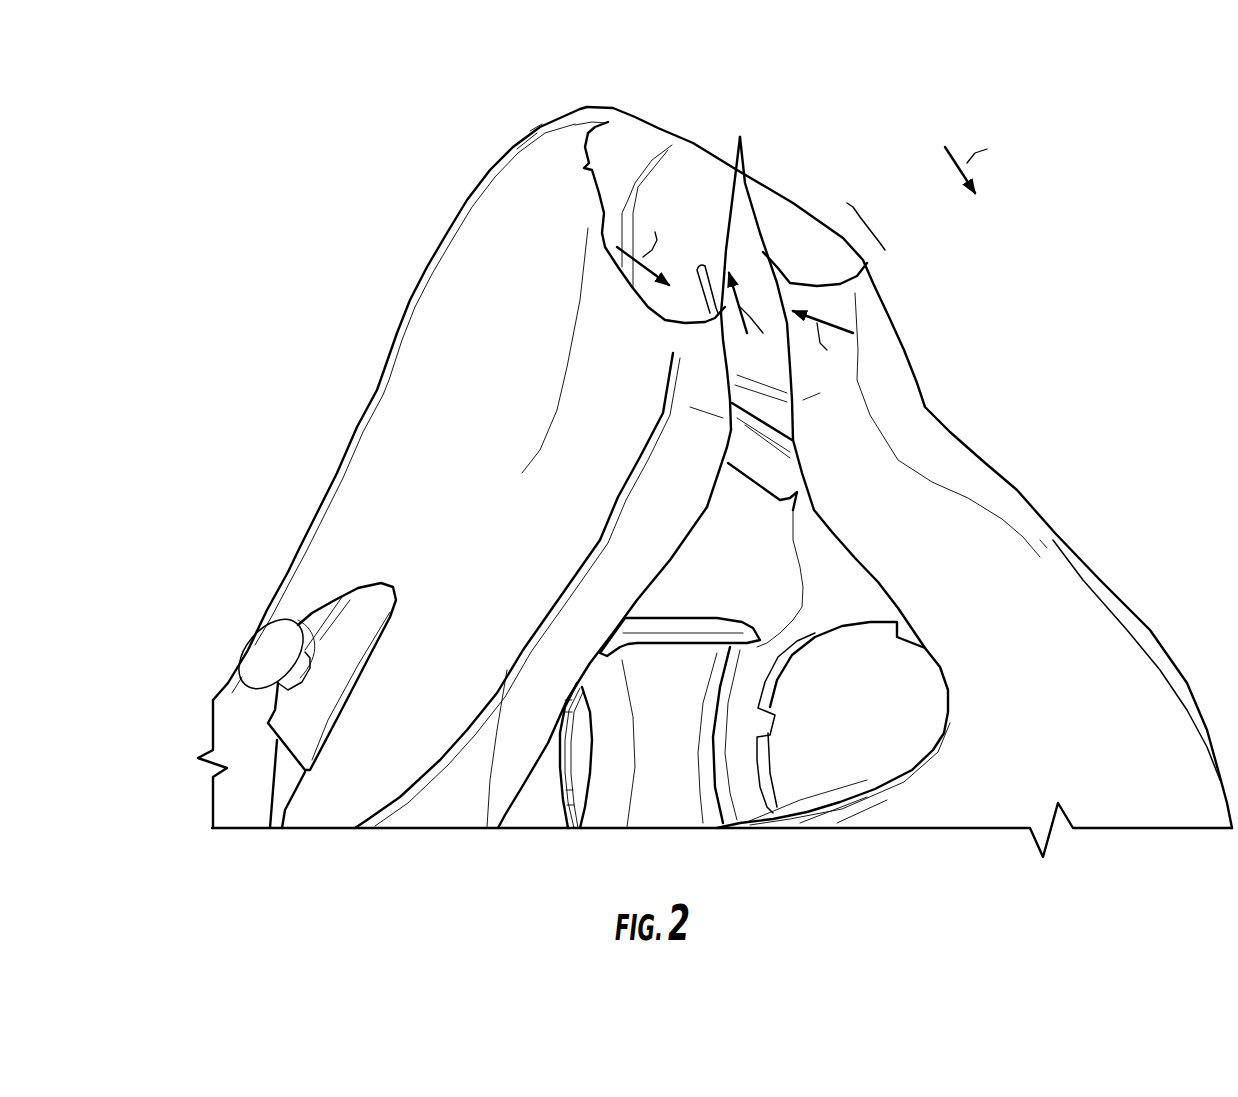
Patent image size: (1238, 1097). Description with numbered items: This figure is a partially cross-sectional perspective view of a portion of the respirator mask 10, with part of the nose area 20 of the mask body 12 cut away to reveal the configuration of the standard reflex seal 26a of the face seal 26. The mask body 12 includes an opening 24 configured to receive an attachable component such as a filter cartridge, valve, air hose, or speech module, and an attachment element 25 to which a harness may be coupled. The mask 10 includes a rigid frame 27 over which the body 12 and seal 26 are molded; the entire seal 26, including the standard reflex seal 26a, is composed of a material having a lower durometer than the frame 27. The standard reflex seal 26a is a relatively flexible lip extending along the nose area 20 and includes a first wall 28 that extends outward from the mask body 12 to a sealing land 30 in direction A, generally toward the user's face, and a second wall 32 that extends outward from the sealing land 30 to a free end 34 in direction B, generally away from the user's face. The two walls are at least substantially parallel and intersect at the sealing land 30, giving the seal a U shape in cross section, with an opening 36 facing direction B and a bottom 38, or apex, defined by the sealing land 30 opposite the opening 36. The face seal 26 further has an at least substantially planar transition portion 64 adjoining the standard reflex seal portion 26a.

The respirator mask 10 is at (1012, 101).
The mask body 12 is at (358, 546).
The nose area 20 is at (488, 260).
The opening 24 is at (842, 737).
The attachment element 25 is at (272, 653).
The face seal 26 is at (890, 383).
The standard reflex seal 26a is at (665, 448).
The rigid frame 27 is at (707, 640).
The first wall 28 is at (652, 297).
The sealing land 30 is at (696, 354).
The second wall 32 is at (740, 141).
The free end 34 is at (693, 254).
The opening 36 is at (671, 262).
The bottom 38 is at (866, 274).
The transition portion 64 is at (1040, 540).